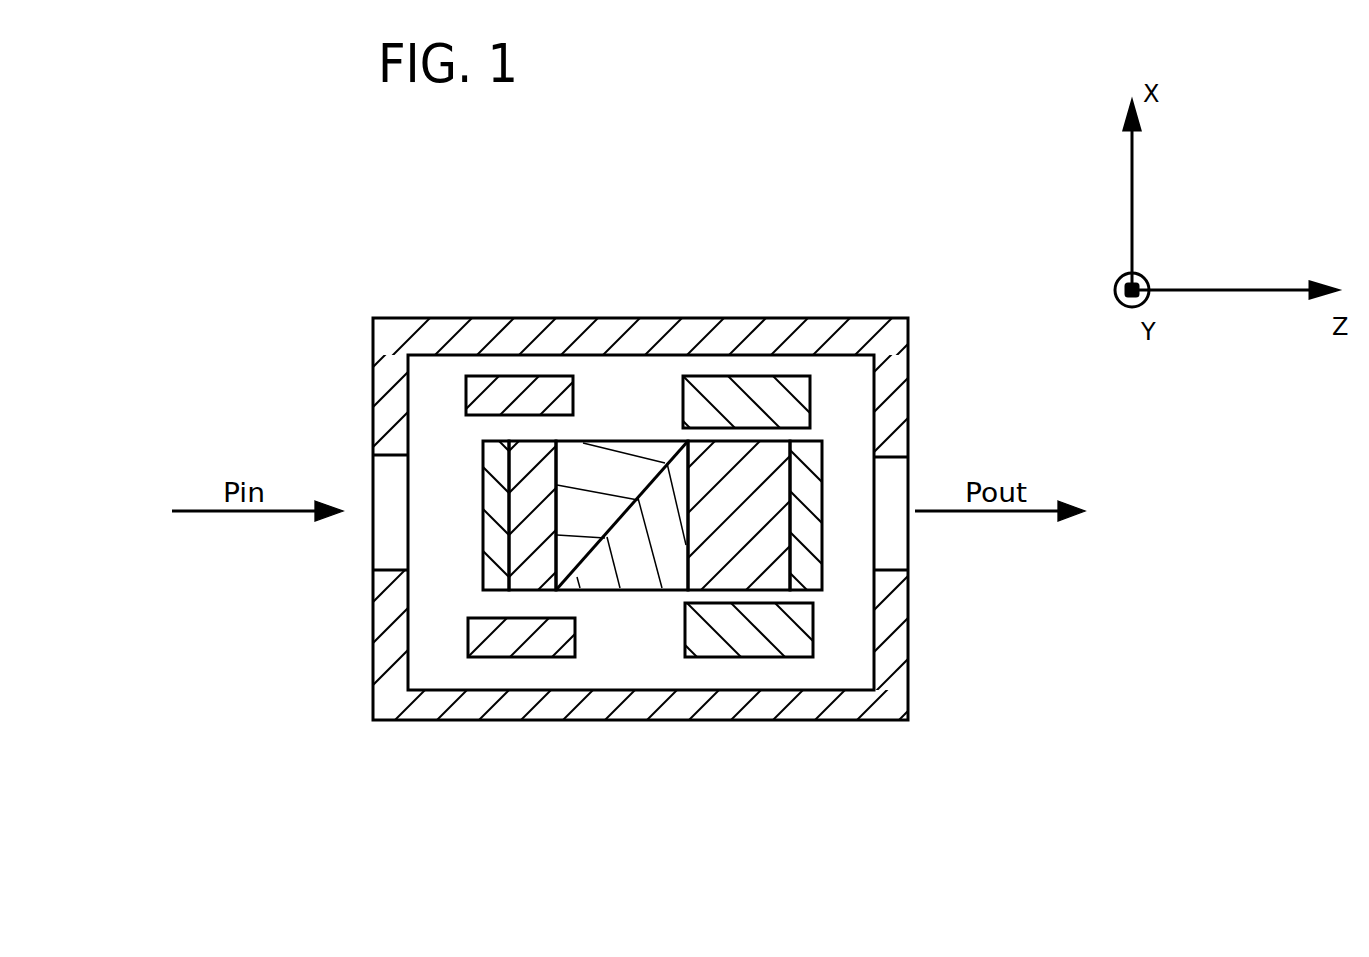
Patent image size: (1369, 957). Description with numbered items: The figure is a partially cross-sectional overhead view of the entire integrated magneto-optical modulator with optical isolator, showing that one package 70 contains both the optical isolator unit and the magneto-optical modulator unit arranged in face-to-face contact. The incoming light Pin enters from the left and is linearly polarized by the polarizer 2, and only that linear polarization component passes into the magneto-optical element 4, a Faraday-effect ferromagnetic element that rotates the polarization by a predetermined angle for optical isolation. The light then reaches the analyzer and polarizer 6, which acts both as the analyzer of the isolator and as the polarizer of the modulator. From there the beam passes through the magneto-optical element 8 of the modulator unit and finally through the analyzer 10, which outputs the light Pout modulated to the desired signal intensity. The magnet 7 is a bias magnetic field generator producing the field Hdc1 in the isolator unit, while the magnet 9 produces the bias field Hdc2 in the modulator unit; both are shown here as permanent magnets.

The polarizer 2 is at (492, 460).
The magneto-optical element 4 is at (537, 448).
The analyzer and polarizer 6 is at (618, 458).
The magnet 7 is at (477, 385).
The magneto-optical element 8 is at (702, 578).
The magnet 9 is at (718, 385).
The analyzer 10 is at (813, 572).
The package 70 is at (425, 707).